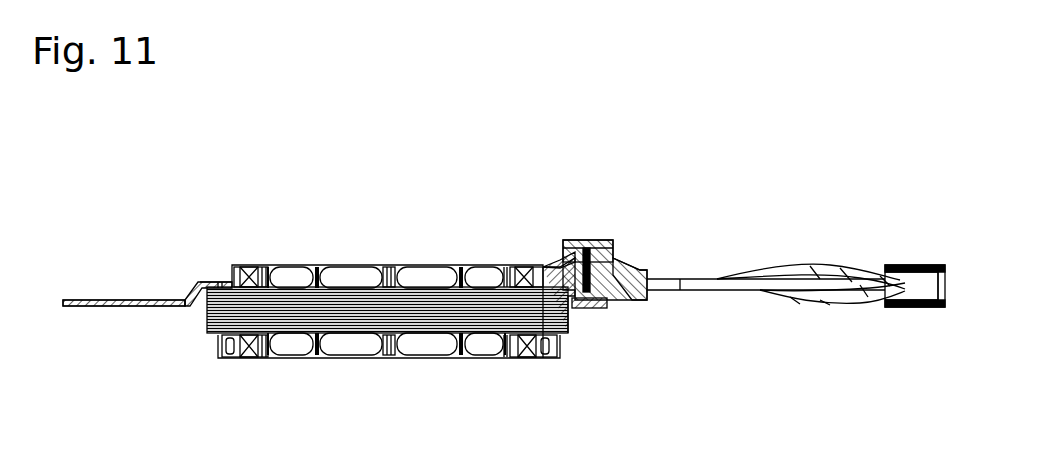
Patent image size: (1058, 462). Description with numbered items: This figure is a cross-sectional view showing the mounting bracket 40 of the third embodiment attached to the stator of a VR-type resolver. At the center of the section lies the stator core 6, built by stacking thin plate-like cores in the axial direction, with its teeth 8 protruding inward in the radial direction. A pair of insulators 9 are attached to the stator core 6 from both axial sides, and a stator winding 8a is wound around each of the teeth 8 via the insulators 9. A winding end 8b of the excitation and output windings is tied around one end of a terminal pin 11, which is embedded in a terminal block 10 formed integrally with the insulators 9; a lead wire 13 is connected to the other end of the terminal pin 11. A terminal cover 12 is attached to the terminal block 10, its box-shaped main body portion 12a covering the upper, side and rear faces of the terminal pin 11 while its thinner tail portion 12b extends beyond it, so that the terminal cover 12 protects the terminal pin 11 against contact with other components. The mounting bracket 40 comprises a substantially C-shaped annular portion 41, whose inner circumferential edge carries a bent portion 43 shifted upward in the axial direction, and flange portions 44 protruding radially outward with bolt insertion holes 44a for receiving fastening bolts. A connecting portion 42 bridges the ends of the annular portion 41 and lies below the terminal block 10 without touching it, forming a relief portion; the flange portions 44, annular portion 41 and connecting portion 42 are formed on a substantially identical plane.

The stator core 6 is at (563, 350).
The teeth 8 is at (363, 340).
The stator winding 8a is at (248, 266).
The winding end 8b is at (562, 264).
The insulators 9 is at (347, 275).
The terminal block 10 is at (652, 298).
The terminal pin 11 is at (582, 238).
The terminal cover 12 is at (603, 238).
The main body portion 12a is at (572, 240).
The tail portion 12b is at (633, 258).
The lead wire 13 is at (803, 270).
The mounting bracket 40 is at (212, 272).
The annular portion 41 is at (178, 312).
The connecting portion 42 is at (594, 311).
The bent portion 43 is at (208, 280).
The flange portions 44 is at (143, 298).
The bolt insertion holes 44a is at (93, 298).